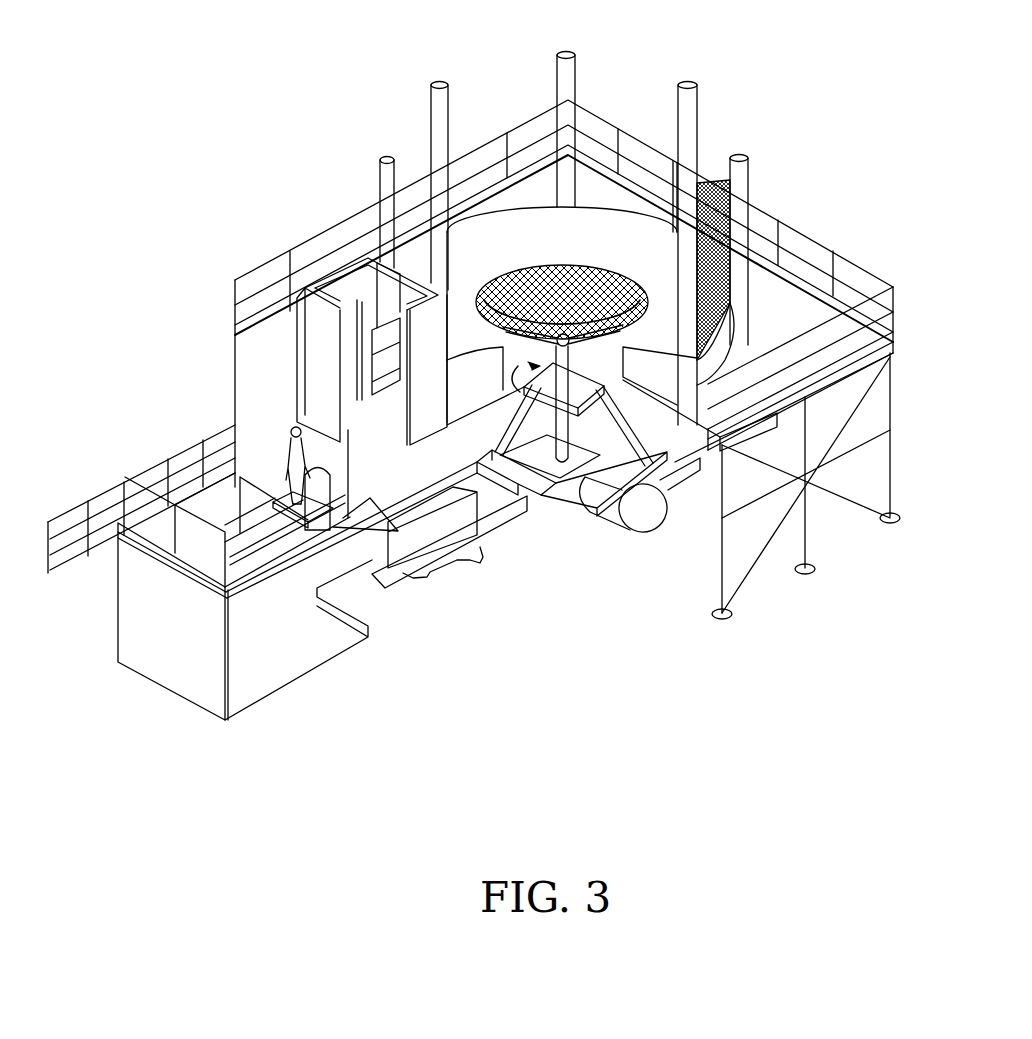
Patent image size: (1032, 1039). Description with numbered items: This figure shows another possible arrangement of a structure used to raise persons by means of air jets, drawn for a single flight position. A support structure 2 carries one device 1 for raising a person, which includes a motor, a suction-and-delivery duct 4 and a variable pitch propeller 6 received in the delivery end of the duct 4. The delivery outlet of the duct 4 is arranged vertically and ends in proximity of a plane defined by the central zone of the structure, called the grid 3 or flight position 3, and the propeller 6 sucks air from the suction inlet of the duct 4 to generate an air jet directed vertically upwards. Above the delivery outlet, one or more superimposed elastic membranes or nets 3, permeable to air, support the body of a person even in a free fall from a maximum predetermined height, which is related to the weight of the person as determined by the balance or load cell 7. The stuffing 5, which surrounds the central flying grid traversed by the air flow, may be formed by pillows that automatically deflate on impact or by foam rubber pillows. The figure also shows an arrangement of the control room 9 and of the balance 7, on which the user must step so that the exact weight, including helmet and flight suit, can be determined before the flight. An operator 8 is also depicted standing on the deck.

The device for raising a person 1 is at (574, 447).
The support structure 2 is at (848, 493).
The grid or elastic net 3 is at (508, 322).
The suction-and-delivery duct 4 is at (650, 516).
The stuffing 5 is at (600, 213).
The variable pitch propeller 6 is at (546, 366).
The balance or load cell 7 is at (305, 517).
The operator 8 is at (293, 448).
The control room 9 is at (338, 292).